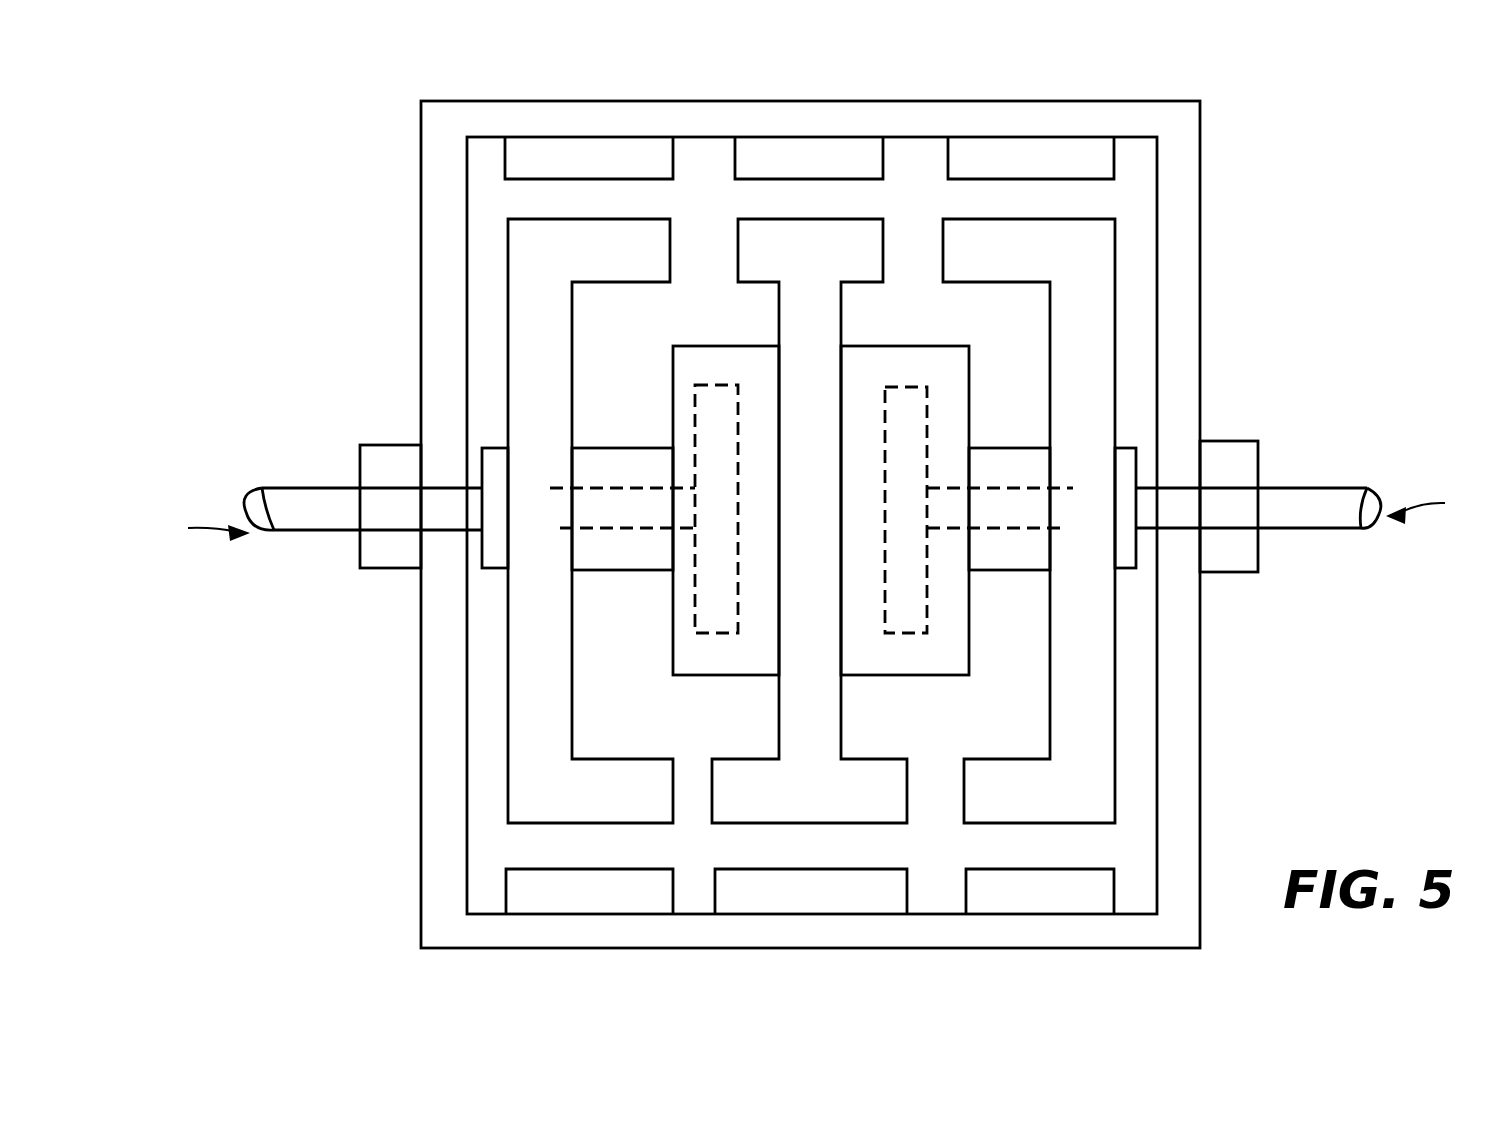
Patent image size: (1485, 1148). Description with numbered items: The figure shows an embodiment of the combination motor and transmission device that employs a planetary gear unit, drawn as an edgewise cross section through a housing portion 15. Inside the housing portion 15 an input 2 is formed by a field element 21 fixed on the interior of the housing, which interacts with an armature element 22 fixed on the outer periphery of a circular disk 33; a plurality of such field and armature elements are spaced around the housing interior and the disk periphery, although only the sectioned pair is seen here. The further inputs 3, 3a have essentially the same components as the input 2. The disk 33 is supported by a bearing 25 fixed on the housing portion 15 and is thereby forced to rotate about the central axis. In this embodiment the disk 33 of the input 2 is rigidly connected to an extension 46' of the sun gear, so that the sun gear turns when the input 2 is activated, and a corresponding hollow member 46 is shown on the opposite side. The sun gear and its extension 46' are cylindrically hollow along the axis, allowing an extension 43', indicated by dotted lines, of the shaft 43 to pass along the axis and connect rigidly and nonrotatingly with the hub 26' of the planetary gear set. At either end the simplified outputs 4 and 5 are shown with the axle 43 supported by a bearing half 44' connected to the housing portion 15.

The housing portion 15 is at (1200, 155).
The input 2 is at (889, 92).
The input 3 is at (1067, 92).
The input 3a is at (572, 88).
The field element 21 is at (736, 158).
The armature element 22 is at (737, 248).
The circular disk 33 is at (780, 337).
The hub of the planetary gear set 26' is at (828, 512).
The collar 46 is at (622, 475).
The extension of the sun gear 46' is at (1009, 545).
The axle 43 is at (820, 504).
The extension of shaft 43' is at (832, 552).
The bearing 25 is at (495, 445).
The bearing half 44' is at (823, 506).
The output 4 is at (206, 530).
The output 5 is at (1429, 508).